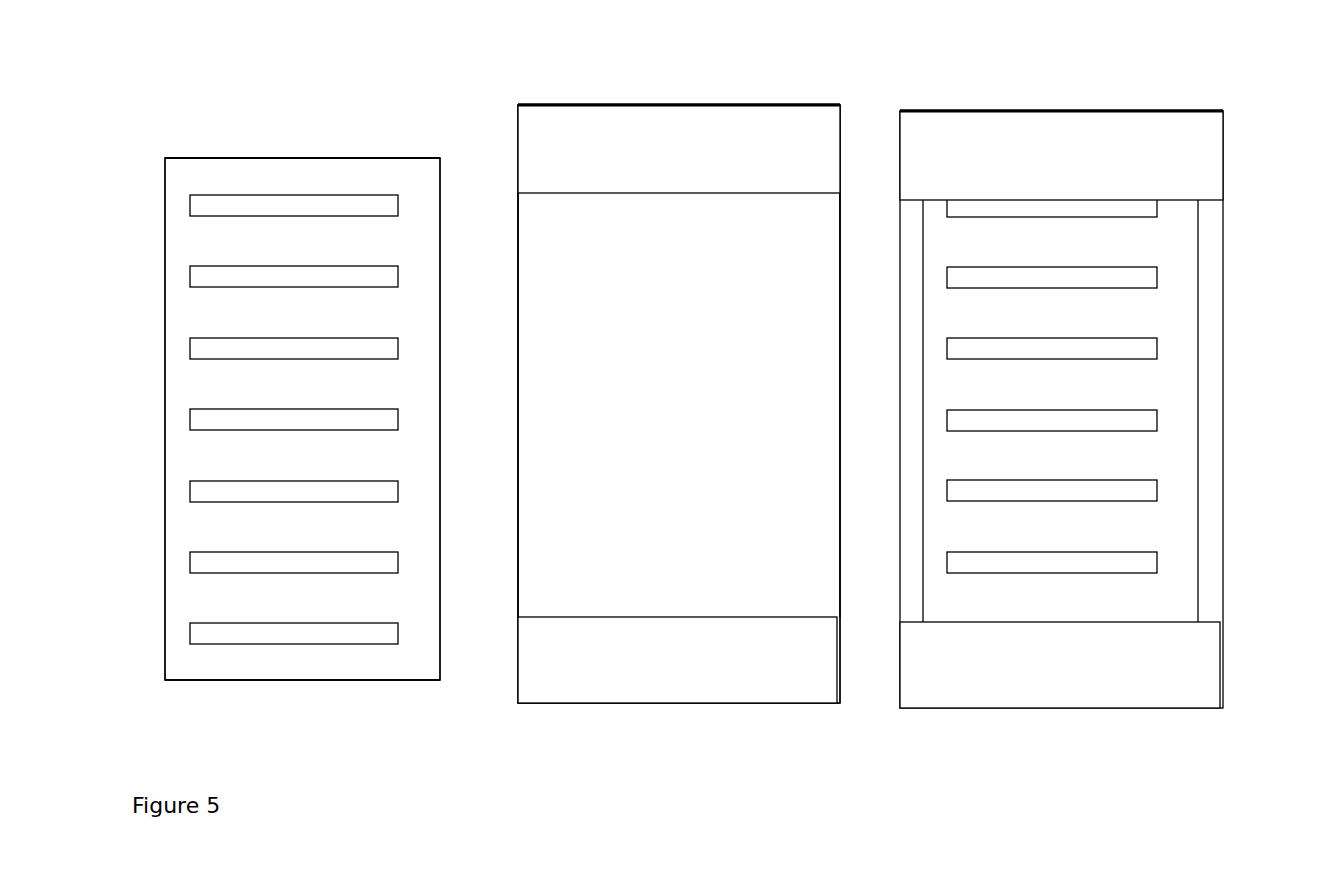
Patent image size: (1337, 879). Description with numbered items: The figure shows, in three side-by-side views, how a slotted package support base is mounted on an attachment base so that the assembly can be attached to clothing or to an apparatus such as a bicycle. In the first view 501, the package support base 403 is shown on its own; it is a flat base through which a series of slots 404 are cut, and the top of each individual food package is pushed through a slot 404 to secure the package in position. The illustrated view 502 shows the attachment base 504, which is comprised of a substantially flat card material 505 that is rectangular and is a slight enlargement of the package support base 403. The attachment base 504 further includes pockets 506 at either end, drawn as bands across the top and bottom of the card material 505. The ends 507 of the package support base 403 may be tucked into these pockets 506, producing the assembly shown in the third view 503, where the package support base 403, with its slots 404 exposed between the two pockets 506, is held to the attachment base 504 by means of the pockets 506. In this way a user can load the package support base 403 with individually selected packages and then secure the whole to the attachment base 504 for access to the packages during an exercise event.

The package support base 403 is at (189, 170).
The slots 404 is at (396, 203).
The first view 501 is at (282, 753).
The illustrated view 502 is at (664, 768).
The third view 503 is at (1050, 778).
The attachment base 504 is at (603, 87).
The substantially flat card material 505 is at (653, 281).
The pockets 506 is at (949, 145).
The ends 507 is at (287, 156).